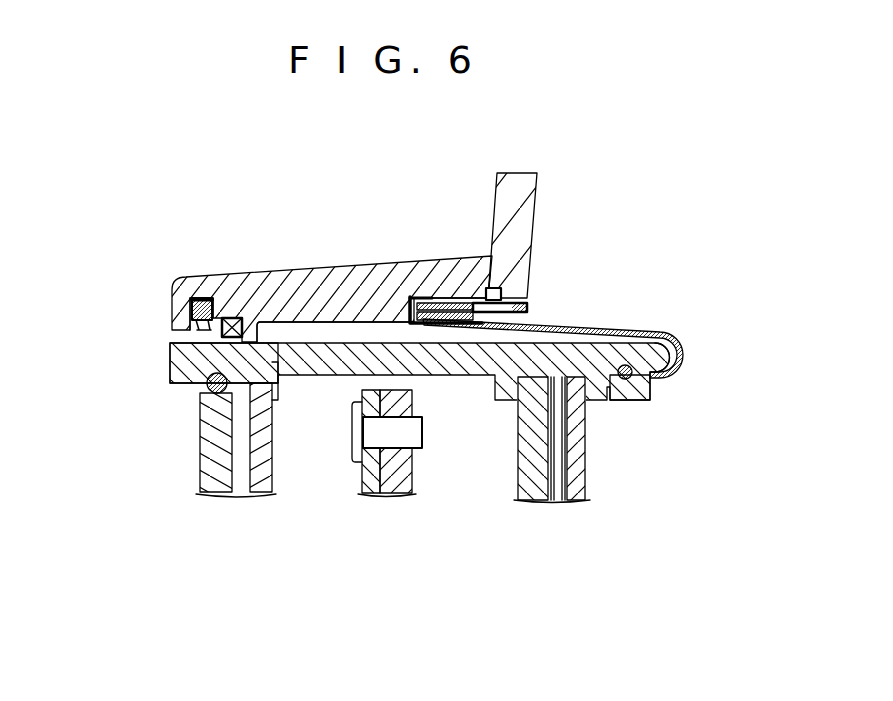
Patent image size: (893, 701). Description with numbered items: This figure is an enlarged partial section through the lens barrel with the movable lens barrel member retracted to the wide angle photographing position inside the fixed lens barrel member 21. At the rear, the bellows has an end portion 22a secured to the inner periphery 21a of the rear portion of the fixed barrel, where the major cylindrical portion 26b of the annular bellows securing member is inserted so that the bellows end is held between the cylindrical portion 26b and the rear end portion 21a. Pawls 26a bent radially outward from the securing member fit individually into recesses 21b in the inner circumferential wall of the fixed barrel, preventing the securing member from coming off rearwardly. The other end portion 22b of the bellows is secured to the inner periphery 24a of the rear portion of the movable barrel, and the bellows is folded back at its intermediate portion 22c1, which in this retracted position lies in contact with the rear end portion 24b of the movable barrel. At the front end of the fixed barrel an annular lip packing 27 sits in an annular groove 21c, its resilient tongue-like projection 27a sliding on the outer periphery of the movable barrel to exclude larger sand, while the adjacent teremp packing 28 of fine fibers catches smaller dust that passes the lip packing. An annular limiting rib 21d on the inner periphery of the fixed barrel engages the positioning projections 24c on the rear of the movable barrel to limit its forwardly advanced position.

The fixed lens barrel member 21 is at (324, 277).
The inner periphery of rear portion of fixed lens barrel member 21a is at (418, 297).
The recesses 21b is at (500, 291).
The annular groove 21c is at (188, 315).
The annular limiting projection or rib 21d is at (262, 324).
The end portion of bellows 22a is at (450, 298).
The other end portion of bellows 22b is at (637, 392).
The folded back portion of bellows 22c1 is at (684, 339).
The inner periphery of rear portion of movable lens barrel member 24a is at (625, 397).
The rear end portion of movable lens barrel member 24b is at (665, 363).
The positioning projections 24c is at (643, 348).
The pawls 26a is at (505, 295).
The major cylindrical portion 26b is at (451, 300).
The annular lip packing 27 is at (197, 297).
The resilient tongue-like projection 27a is at (172, 345).
The teremp packing 28 is at (237, 317).